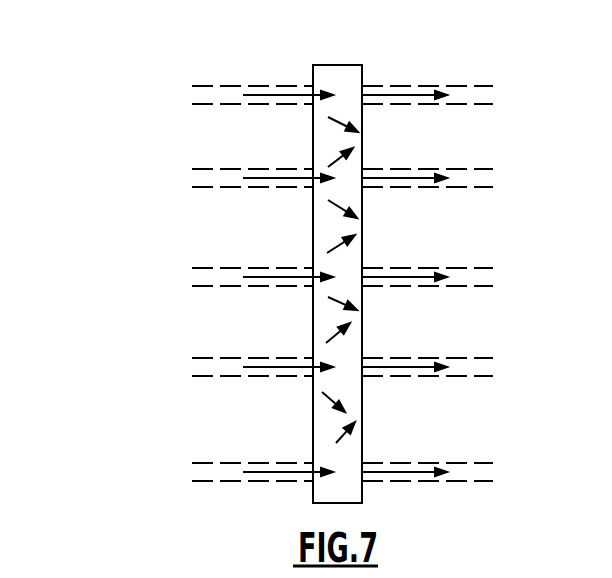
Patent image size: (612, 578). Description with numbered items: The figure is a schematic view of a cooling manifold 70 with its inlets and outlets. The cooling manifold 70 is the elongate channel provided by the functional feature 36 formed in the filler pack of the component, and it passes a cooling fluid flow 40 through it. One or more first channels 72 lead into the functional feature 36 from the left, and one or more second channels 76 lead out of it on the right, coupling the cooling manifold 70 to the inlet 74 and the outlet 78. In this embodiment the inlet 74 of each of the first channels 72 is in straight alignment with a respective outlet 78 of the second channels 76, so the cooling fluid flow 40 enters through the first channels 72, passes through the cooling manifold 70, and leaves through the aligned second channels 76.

The functional feature 36 is at (363, 238).
The cooling fluid flow 40 is at (380, 93).
The cooling manifold 70 is at (363, 443).
The first channels 72 is at (203, 86).
The inlet 74 is at (172, 176).
The second channels 76 is at (477, 97).
The outlet 78 is at (515, 176).